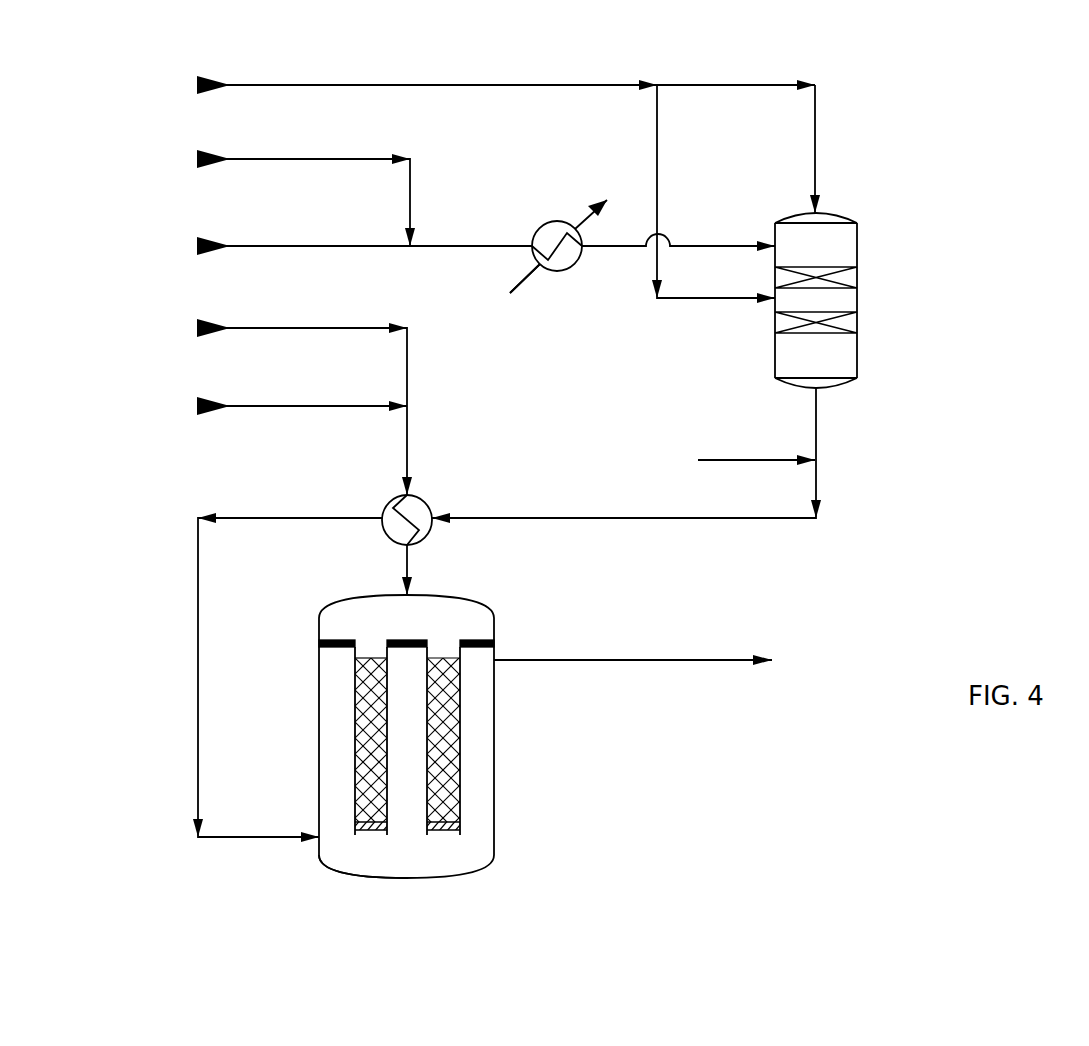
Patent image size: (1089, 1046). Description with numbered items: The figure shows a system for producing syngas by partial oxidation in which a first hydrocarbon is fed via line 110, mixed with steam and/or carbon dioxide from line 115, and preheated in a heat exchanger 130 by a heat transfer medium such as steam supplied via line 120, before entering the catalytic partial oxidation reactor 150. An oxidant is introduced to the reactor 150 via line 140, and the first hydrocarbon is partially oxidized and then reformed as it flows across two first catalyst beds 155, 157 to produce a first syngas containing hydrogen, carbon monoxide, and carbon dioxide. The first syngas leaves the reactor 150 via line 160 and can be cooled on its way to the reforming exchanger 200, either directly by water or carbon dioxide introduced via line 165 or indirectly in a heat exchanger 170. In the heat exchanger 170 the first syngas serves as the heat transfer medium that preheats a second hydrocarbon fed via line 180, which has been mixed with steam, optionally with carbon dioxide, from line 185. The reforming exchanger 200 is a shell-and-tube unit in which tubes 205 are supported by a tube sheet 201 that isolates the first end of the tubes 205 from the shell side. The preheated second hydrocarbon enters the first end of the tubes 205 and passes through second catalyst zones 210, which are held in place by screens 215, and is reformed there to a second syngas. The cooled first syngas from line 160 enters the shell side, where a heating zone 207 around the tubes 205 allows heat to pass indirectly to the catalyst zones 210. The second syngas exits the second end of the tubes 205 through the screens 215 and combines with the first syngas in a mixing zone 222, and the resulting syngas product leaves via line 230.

The first hydrocarbon line 110 is at (258, 244).
The steam and/or carbon dioxide line 115 is at (297, 157).
The heat transfer medium line 120 is at (582, 223).
The heat exchanger 130 is at (557, 272).
The oxidant line 140 is at (496, 82).
The catalytic partial oxidation reactor 150 is at (858, 240).
The first catalyst bed 155 is at (847, 280).
The first catalyst bed 157 is at (847, 322).
The first syngas line 160 is at (816, 420).
The cooling medium line 165 is at (721, 458).
The heat exchanger 170 is at (426, 500).
The second hydrocarbon line 180 is at (261, 326).
The steam line 185 is at (258, 404).
The reforming exchanger 200 is at (344, 595).
The tube sheet 201 is at (494, 642).
The tube 205 is at (461, 678).
The heating zone 207 is at (345, 742).
The second catalyst zone 210 is at (443, 730).
The screen 215 is at (455, 828).
The mixing zone 222 is at (380, 850).
The syngas product line 230 is at (624, 657).